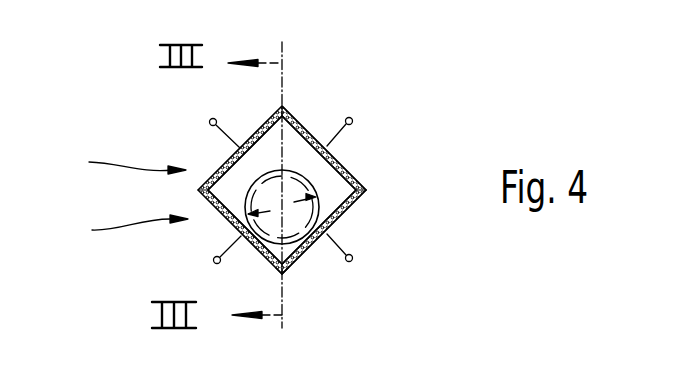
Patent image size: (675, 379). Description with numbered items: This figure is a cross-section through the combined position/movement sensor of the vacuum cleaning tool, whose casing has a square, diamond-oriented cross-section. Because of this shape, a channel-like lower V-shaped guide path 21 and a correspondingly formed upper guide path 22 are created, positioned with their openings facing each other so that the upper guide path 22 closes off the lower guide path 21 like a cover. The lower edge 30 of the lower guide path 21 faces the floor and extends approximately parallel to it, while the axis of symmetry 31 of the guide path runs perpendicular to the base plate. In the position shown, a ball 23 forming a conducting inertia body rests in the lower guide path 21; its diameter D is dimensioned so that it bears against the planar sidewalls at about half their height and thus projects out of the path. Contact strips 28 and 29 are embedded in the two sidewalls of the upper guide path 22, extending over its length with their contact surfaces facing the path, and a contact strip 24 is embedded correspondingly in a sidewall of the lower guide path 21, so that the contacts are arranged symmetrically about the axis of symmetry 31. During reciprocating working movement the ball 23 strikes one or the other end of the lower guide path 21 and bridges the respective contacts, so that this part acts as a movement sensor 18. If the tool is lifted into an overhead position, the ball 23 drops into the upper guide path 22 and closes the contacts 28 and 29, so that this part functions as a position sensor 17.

The position sensor 17 is at (124, 156).
The movement sensor 18 is at (125, 222).
The lower guide path 21 is at (338, 225).
The upper guide path 22 is at (295, 141).
The ball 23 is at (318, 188).
The contact strip 24 is at (234, 226).
The contact strip 28 is at (256, 136).
The contact strip 29 is at (343, 164).
The lower edge 30 is at (282, 275).
The axis of symmetry 31 is at (279, 282).